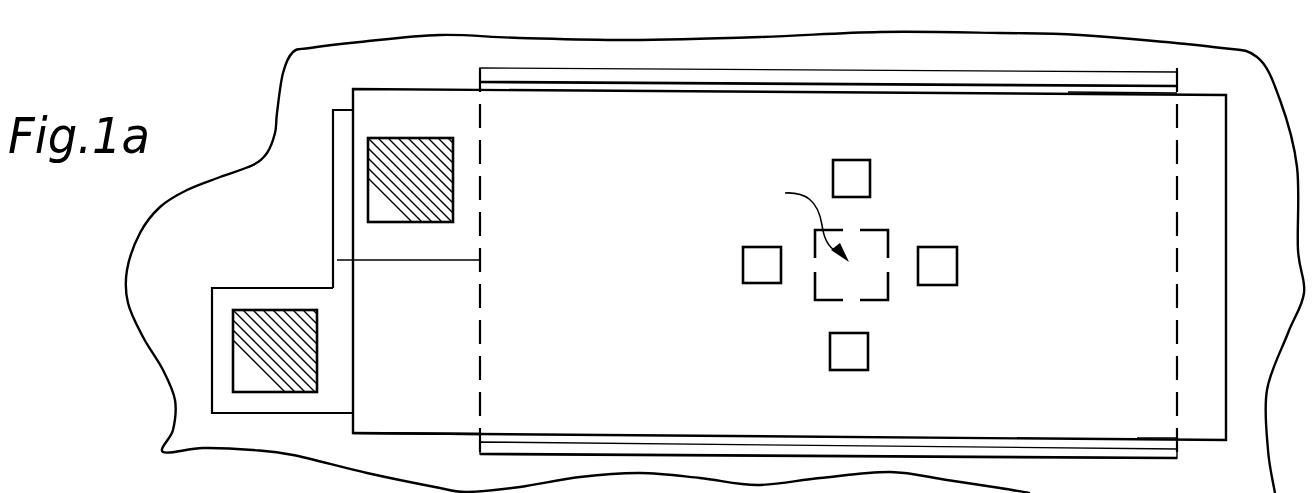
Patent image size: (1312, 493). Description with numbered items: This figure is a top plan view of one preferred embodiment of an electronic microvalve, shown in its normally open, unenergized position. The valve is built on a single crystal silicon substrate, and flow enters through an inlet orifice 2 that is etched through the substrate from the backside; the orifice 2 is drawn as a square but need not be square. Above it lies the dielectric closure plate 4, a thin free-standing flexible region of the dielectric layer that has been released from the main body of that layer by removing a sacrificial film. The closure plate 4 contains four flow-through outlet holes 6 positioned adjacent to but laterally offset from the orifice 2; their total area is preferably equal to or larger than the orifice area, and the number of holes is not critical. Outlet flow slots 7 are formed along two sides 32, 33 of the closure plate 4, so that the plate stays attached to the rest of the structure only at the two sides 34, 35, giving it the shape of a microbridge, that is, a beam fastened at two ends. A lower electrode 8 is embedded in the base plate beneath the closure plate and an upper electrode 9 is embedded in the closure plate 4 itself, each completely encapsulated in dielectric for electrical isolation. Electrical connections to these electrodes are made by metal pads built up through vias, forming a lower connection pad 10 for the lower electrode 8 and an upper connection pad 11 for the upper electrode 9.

The inlet orifice 2 is at (824, 239).
The dielectric closure plate 4 is at (643, 100).
The flow-through outlet holes 6 is at (868, 343).
The outlet flow slots 7 is at (938, 70).
The lower electrode 8 is at (333, 270).
The upper electrode 9 is at (405, 437).
The lower connection pad 10 is at (248, 310).
The upper connection pad 11 is at (368, 174).
The side of the closure plate 32 is at (1068, 92).
The side of the closure plate 33 is at (1137, 430).
The attachment side 34 is at (1177, 236).
The attachment side 35 is at (340, 260).